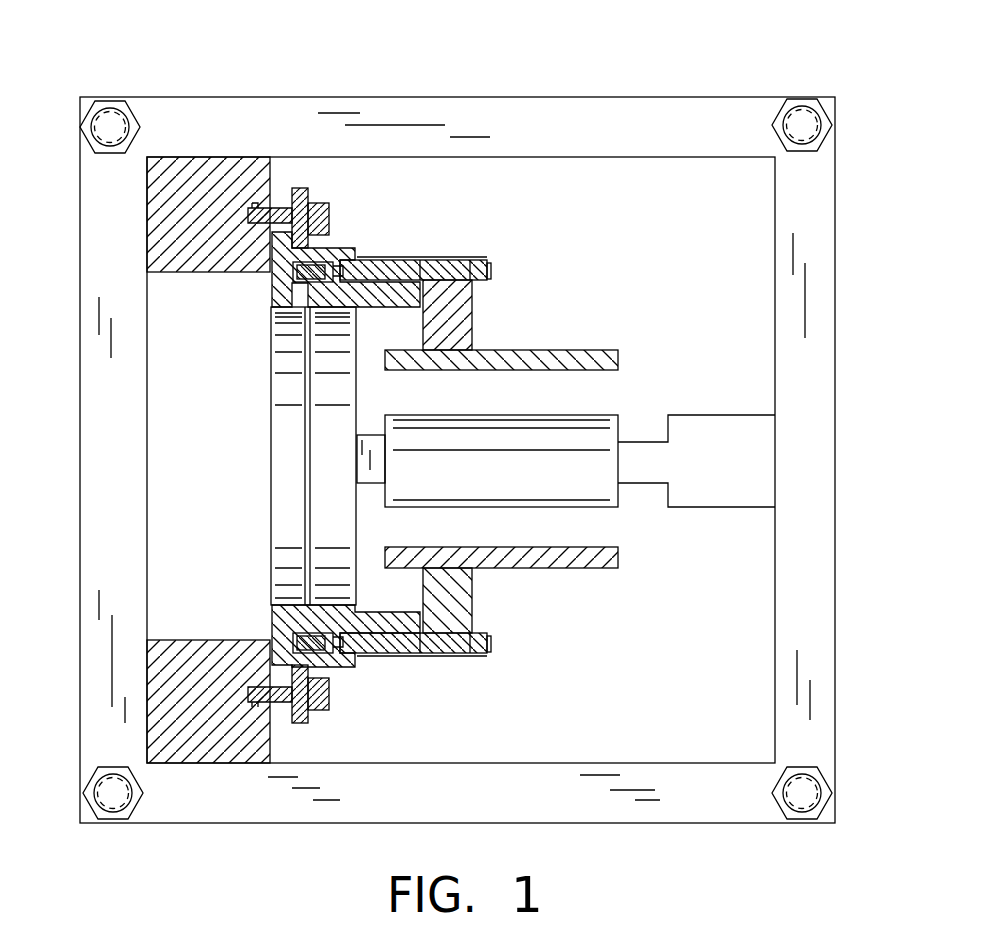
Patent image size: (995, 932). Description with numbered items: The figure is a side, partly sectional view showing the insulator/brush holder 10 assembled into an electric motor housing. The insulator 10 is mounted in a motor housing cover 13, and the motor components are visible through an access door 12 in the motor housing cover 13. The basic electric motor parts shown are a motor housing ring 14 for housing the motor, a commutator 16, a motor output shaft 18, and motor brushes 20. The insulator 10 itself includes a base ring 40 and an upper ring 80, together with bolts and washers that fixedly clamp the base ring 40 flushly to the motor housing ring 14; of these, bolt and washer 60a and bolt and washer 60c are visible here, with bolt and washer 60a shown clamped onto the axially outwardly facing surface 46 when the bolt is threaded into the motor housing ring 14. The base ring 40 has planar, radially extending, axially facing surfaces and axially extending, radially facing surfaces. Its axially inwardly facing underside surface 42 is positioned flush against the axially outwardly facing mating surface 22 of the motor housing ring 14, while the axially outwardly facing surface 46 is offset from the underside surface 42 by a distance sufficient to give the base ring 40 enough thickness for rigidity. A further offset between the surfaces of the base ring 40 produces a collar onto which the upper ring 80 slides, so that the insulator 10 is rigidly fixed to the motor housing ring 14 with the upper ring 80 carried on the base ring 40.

The insulator/brush holder 10 is at (505, 207).
The access door 12 is at (818, 465).
The motor housing cover 13 is at (604, 71).
The motor housing ring 14 is at (200, 740).
The commutator 16 is at (572, 507).
The motor output shaft 18 is at (715, 487).
The motor brushes 20 is at (568, 352).
The mating surface 22 is at (272, 736).
The base ring 40 is at (282, 290).
The underside surface 42 is at (272, 617).
The axially outwardly facing surface 46 is at (296, 253).
The bolt and washer 60a is at (334, 711).
The bolt and washer 60c is at (333, 221).
The upper ring 80 is at (393, 654).